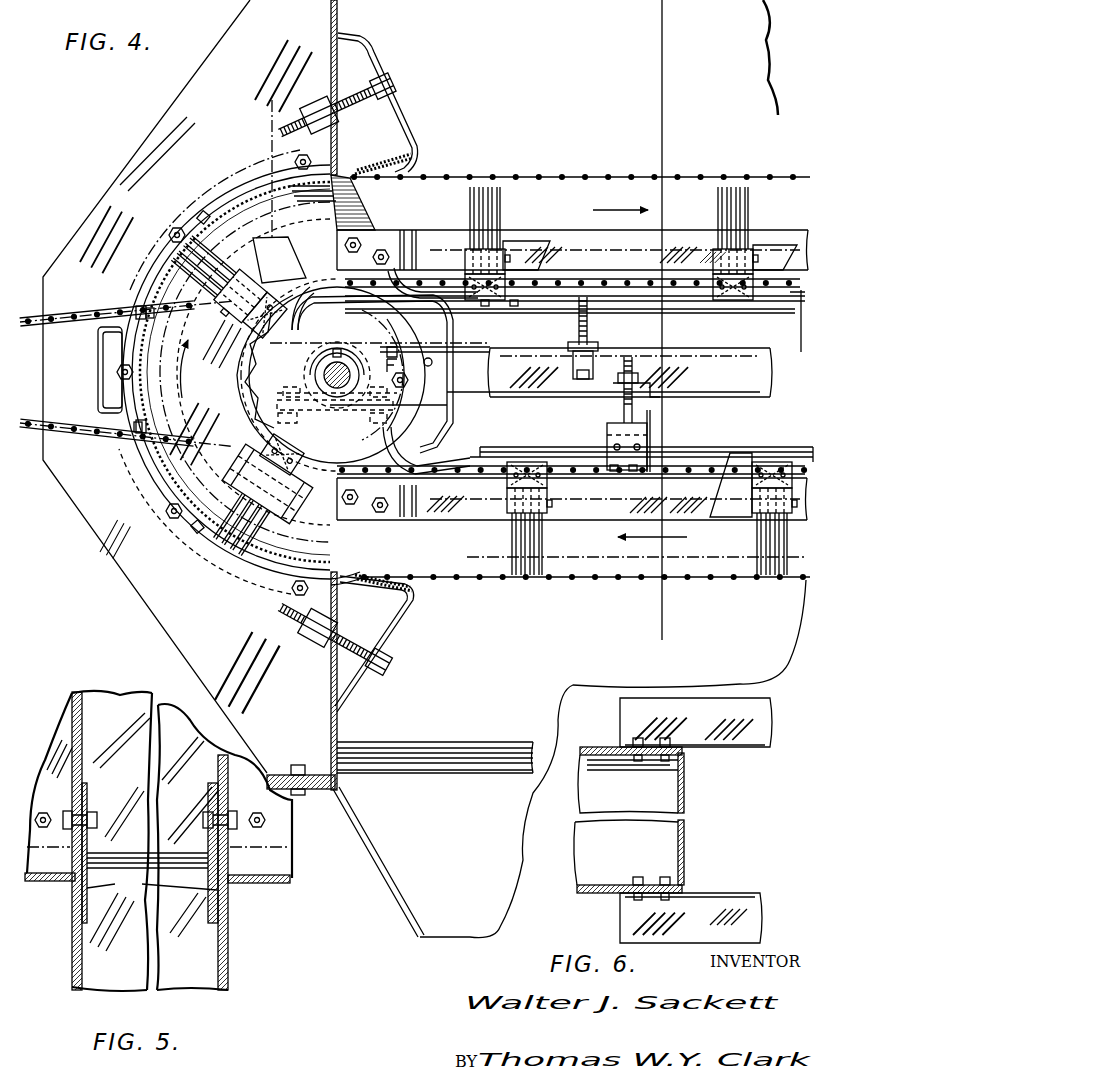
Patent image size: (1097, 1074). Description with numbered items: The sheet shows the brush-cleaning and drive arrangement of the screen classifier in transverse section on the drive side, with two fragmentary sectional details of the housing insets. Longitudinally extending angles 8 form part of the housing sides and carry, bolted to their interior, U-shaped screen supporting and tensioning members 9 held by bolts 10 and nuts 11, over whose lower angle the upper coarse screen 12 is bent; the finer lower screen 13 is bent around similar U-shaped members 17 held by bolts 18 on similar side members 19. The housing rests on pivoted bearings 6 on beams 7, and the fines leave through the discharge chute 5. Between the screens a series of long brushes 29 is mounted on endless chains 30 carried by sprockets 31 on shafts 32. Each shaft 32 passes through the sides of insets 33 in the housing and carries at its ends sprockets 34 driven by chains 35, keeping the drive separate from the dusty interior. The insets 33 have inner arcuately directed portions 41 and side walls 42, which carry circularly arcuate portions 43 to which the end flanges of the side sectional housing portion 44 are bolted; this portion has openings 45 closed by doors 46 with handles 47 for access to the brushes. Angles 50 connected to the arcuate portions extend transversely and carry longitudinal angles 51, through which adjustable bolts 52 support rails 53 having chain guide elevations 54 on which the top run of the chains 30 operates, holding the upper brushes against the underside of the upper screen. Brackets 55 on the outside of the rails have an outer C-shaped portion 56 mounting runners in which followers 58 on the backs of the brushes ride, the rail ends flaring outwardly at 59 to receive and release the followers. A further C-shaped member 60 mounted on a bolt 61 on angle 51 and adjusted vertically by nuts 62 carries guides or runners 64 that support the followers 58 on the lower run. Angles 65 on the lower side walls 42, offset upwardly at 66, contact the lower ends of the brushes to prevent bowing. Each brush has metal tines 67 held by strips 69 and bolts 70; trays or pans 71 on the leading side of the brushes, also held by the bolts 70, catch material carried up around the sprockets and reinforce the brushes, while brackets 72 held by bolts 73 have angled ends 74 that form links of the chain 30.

In FIG. 4, the discharge chute 5 is at (266, 122).
In FIG. 4, the pivoted bearings 6 is at (377, 341).
In FIG. 4, the beams 7 is at (490, 555).
In FIG. 4, the longitudinally extending angles 8 is at (340, 20).
In FIG. 4, the U-shaped screen supporting and tensioning members 9 is at (395, 112).
In FIG. 4, the bolts 10 is at (370, 97).
In FIG. 4, the nuts 11 is at (302, 113).
In FIG. 4, the upper coarse screen 12 is at (593, 175).
In FIG. 4, the lower screen 13 is at (607, 581).
In FIG. 4, the U-shaped screen supporting and tensioning members 17 is at (395, 632).
In FIG. 4, the bolts 18 is at (363, 642).
In FIG. 4, the side members 19 is at (330, 679).
In FIG. 4, the brushes 29 is at (494, 247).
In FIG. 4, the endless chains 30 is at (551, 277).
In FIG. 4, the sprockets 31 is at (247, 392).
In FIG. 4, the shafts 32 is at (328, 371).
In FIG. 4, the insets 33 is at (453, 406).
In FIG. 5, the insets 33 is at (203, 942).
In FIG. 6, the insets 33 is at (684, 790).
In FIG. 4, the sprockets 34 is at (372, 455).
In FIG. 4, the chains 35 is at (115, 436).
In FIG. 4, the inner arcuately directed portions 41 is at (453, 429).
In FIG. 5, the inner arcuately directed portions 41 is at (207, 965).
In FIG. 6, the inner arcuately directed portions 41 is at (684, 850).
In FIG. 4, the side walls 42 is at (262, 484).
In FIG. 5, the side walls 42 is at (77, 970).
In FIG. 6, the side walls 42 is at (630, 880).
In FIG. 4, the circularly arcuate portions 43 is at (177, 541).
In FIG. 5, the circularly arcuate portions 43 is at (150, 853).
In FIG. 4, the side sectional housing portion 44 is at (297, 567).
In FIG. 5, the side sectional housing portion 44 is at (257, 880).
In FIG. 4, the openings for doors 45 is at (197, 513).
In FIG. 4, the doors 46 is at (163, 478).
In FIG. 4, the handles 47 is at (98, 367).
In FIG. 4, the angles 50 is at (665, 360).
In FIG. 6, the angles 50 is at (740, 730).
In FIG. 4, the angles 51 is at (598, 343).
In FIG. 4, the adjustable bolts 52 is at (593, 324).
In FIG. 4, the rails 53 is at (795, 311).
In FIG. 4, the chain guide elevations 54 is at (797, 330).
In FIG. 4, the brackets 55 is at (520, 306).
In FIG. 4, the C shaped portion 56 is at (500, 306).
In FIG. 4, the followers 58 is at (297, 445).
In FIG. 4, the flared rail ends 59 is at (394, 271).
In FIG. 4, the C shaped member 60 is at (651, 430).
In FIG. 4, the bolt 61 is at (622, 407).
In FIG. 4, the nuts 62 is at (640, 383).
In FIG. 4, the guides or runners 64 is at (710, 460).
In FIG. 4, the angles 65 is at (600, 257).
In FIG. 4, the upward offset 66 is at (402, 240).
In FIG. 4, the metal tines 67 is at (498, 190).
In FIG. 4, the strips 69 is at (744, 253).
In FIG. 4, the bolts 70 is at (463, 249).
In FIG. 4, the trays or pans 71 is at (524, 254).
In FIG. 4, the brackets 72 is at (713, 248).
In FIG. 4, the bolts 73 is at (731, 253).
In FIG. 4, the angled ends 74 is at (775, 257).